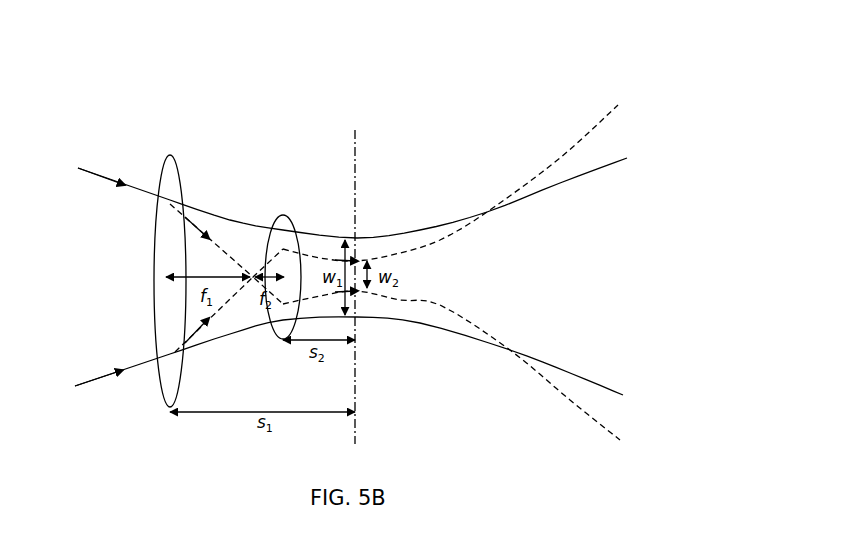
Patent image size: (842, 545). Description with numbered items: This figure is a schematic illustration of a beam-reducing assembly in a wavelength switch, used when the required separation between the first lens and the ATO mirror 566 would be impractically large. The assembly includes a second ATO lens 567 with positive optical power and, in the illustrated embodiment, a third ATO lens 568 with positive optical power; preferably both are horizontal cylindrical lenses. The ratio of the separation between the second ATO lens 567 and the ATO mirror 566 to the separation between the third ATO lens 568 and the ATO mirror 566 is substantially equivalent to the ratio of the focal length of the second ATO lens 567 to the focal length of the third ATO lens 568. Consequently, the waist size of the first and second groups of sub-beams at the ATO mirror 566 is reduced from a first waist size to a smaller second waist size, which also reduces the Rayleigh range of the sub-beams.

The ATO mirror 566 is at (355, 160).
The second ATO lens 567 is at (170, 155).
The third ATO lens 568 is at (283, 215).